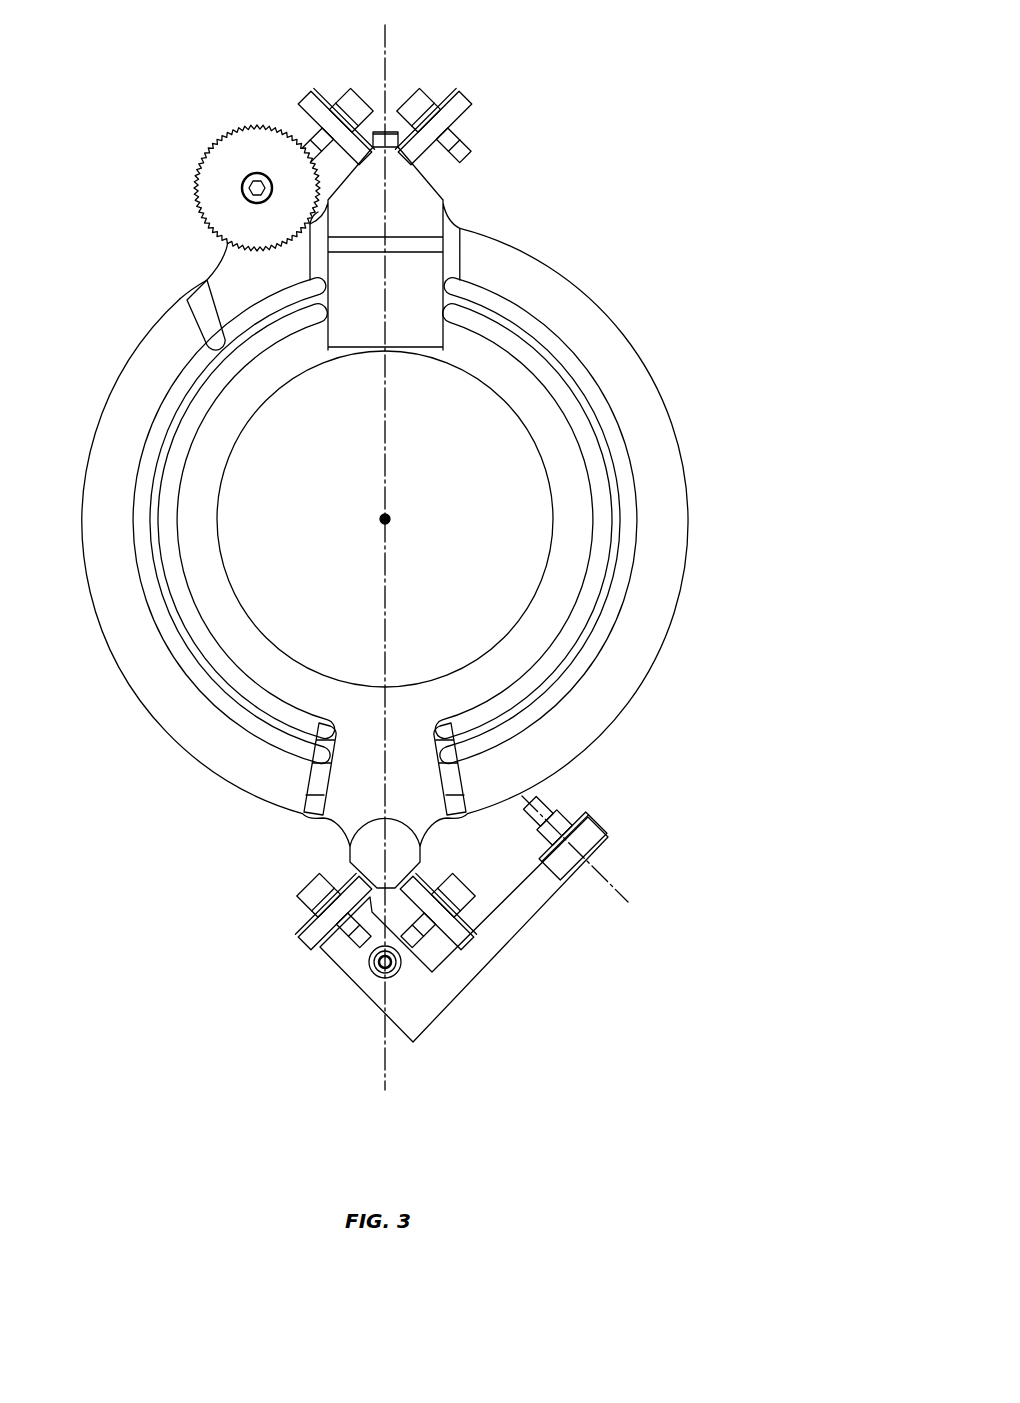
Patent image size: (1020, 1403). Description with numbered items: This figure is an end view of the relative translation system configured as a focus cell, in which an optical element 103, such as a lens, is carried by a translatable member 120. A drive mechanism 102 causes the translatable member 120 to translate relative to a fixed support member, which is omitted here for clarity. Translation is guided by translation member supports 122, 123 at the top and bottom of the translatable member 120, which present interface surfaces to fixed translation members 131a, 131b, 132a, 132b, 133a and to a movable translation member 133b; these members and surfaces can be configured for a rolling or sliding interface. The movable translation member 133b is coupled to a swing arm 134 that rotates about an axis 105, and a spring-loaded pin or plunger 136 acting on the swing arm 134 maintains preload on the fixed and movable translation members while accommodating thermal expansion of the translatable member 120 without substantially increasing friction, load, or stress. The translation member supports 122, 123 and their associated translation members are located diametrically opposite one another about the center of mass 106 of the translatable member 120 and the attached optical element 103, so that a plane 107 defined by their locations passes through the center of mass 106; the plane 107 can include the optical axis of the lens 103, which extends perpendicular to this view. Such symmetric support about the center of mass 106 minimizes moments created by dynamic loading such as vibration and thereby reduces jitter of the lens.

The drive mechanism 102 is at (183, 106).
The optical element 103 is at (495, 440).
The axis 105 is at (618, 868).
The center of mass 106 is at (392, 519).
The plane 107 is at (386, 47).
The translatable member 120 is at (690, 519).
The translation member support 122 is at (408, 187).
The translation member support 123 is at (365, 852).
The fixed translation member 131a is at (489, 122).
The fixed translation member 131b is at (316, 99).
The fixed translation member 132a is at (466, 91).
The fixed translation member 132b is at (302, 95).
The fixed translation member 133a is at (465, 935).
The movable translation member 133b is at (308, 946).
The swing arm 134 is at (437, 1017).
The pin or plunger 136 is at (372, 971).